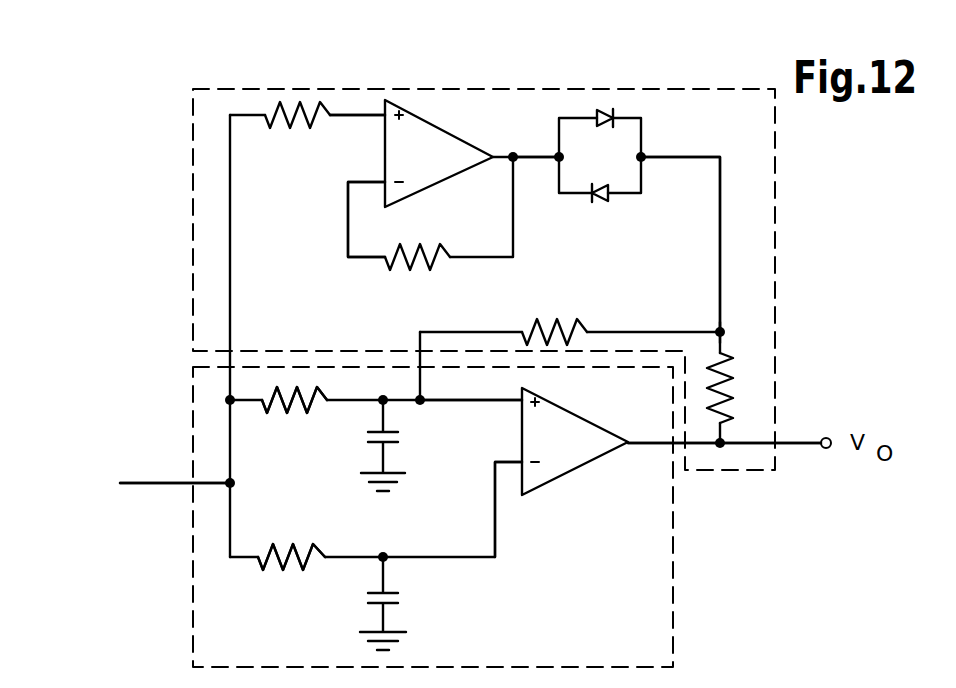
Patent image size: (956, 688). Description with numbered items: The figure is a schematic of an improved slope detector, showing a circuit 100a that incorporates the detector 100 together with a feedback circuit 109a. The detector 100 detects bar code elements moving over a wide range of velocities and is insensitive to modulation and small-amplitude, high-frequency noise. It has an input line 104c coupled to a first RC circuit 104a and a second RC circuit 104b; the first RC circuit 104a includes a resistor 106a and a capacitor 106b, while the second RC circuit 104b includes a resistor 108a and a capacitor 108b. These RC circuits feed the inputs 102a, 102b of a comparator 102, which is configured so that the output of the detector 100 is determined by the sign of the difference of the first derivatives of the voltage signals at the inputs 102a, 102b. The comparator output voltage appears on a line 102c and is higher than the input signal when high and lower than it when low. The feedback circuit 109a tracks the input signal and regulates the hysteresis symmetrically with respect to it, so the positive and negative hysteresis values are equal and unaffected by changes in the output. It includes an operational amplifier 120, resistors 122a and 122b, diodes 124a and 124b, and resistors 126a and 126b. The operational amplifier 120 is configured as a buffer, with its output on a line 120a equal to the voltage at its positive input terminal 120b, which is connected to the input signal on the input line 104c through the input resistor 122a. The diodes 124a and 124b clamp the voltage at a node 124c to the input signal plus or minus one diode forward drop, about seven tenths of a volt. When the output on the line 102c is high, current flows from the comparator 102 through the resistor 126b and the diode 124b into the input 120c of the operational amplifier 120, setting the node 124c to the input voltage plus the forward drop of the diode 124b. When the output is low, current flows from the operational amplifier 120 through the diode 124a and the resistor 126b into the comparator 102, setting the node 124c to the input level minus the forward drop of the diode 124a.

The detector 100 is at (648, 572).
The circuit 100a is at (160, 258).
The comparator 102 is at (583, 462).
The input 102a is at (456, 406).
The input 102b is at (495, 490).
The line 102c is at (797, 442).
The first RC circuit 104a is at (350, 417).
The second RC circuit 104b is at (338, 589).
The input line 104c is at (153, 485).
The resistor 106a is at (280, 388).
The capacitor 106b is at (398, 440).
The resistor 108a is at (293, 545).
The capacitor 108b is at (402, 596).
The feedback circuit 109a is at (748, 319).
The operational amplifier 120 is at (438, 125).
The line 120a is at (535, 157).
The positive input terminal 120b is at (366, 115).
The input 120c is at (347, 200).
The input resistor 122a is at (357, 60).
The resistor 122b is at (437, 260).
The diode 124a is at (608, 113).
The diode 124b is at (599, 205).
The node 124c is at (716, 330).
The resistor 126a is at (598, 282).
The resistor 126b is at (725, 385).